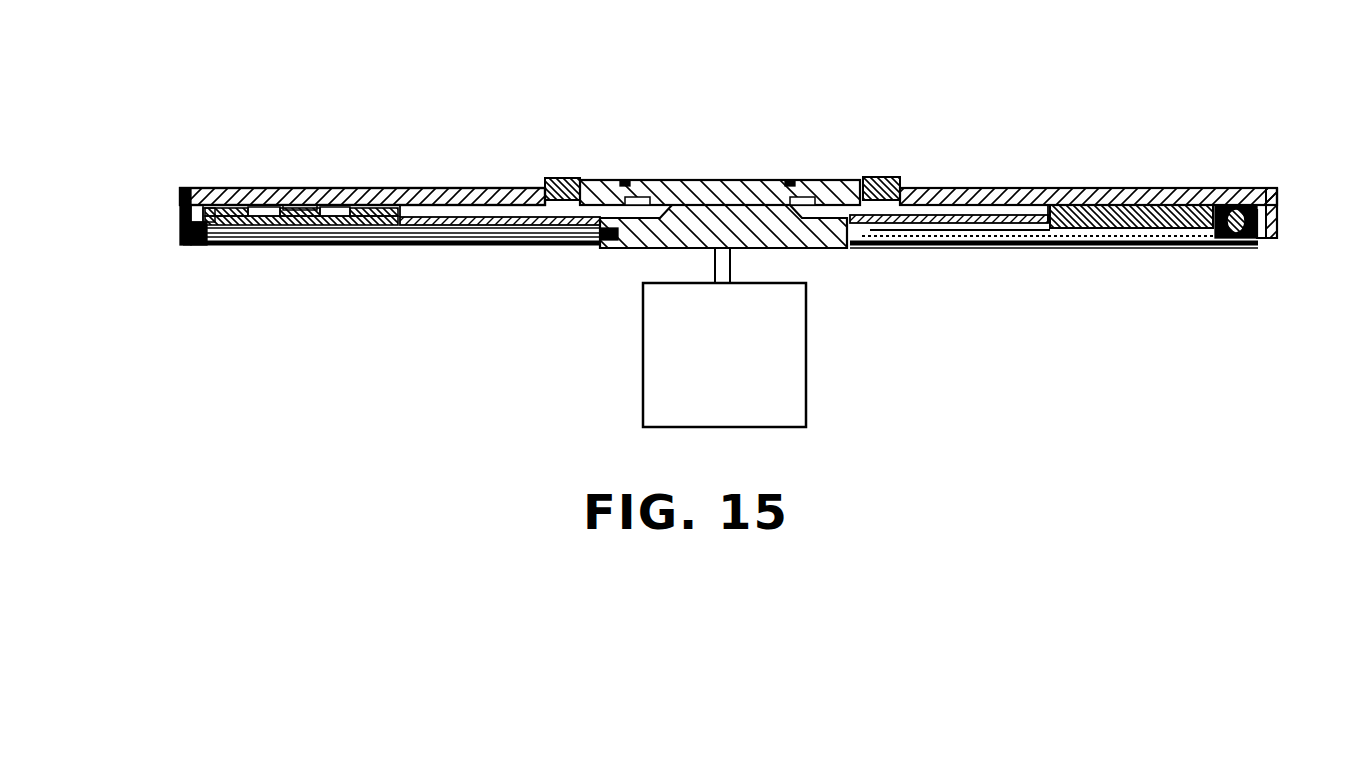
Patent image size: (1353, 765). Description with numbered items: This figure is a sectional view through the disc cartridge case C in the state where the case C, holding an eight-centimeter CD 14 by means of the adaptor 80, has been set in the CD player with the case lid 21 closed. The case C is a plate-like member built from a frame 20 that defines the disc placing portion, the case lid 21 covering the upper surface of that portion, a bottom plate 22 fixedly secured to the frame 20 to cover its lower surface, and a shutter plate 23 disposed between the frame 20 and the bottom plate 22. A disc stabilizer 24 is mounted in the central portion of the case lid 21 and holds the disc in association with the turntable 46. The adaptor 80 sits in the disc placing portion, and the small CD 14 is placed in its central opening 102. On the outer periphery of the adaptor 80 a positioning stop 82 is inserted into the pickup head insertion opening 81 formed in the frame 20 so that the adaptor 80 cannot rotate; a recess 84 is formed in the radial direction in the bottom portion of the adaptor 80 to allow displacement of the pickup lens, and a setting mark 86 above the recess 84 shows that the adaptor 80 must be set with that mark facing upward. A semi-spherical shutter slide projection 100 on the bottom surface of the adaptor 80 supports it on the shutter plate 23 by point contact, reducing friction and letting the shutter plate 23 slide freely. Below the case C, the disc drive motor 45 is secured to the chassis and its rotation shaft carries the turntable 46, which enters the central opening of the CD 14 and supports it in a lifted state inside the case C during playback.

The disc cartridge case C is at (1180, 171).
The 8-cm CD 14 is at (467, 188).
The frame 20 is at (193, 245).
The case lid 21 is at (352, 188).
The bottom plate 22 is at (1043, 245).
The shutter plate 23 is at (1012, 245).
The disc stabilizer 24 is at (725, 180).
The disc drive motor 45 is at (807, 378).
The turntable 46 is at (818, 250).
The adaptor 80 is at (1077, 188).
The pickup head insertion opening 81 is at (225, 245).
The positioning stop 82 is at (233, 245).
The recess 84 is at (332, 245).
The setting mark 86 is at (300, 188).
The shutter slide projection 100 is at (433, 245).
The central opening 102 is at (1030, 185).